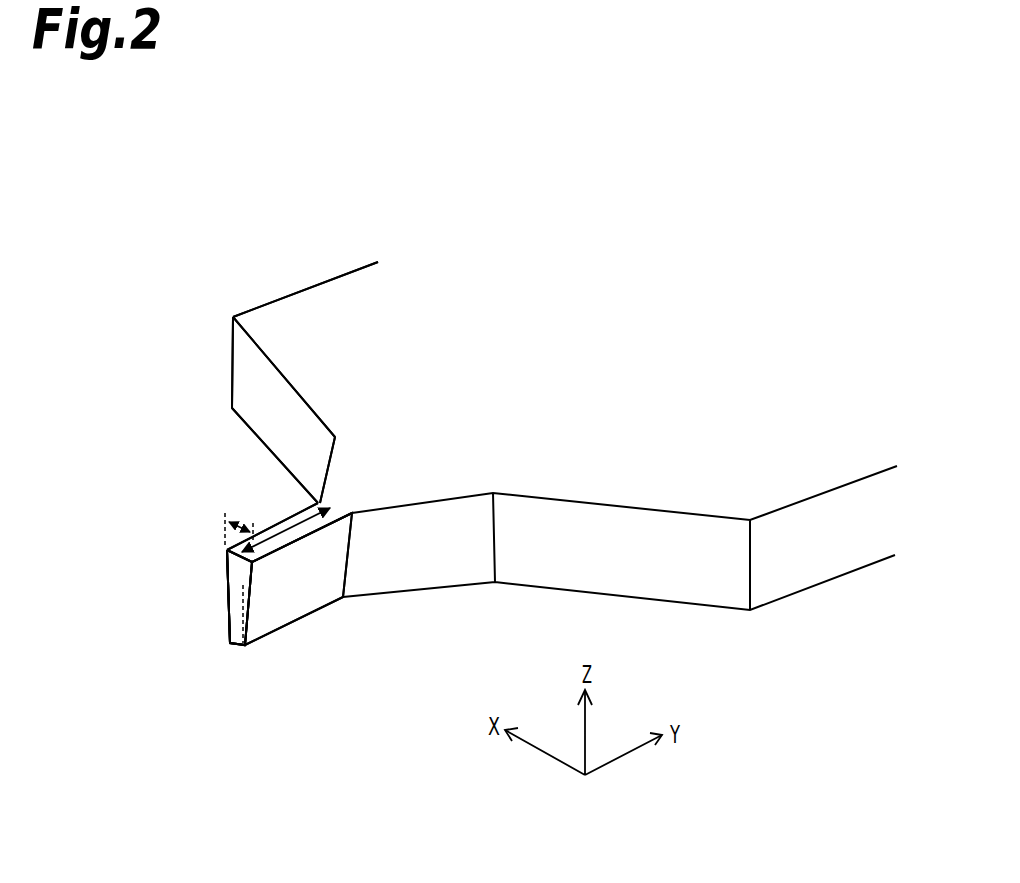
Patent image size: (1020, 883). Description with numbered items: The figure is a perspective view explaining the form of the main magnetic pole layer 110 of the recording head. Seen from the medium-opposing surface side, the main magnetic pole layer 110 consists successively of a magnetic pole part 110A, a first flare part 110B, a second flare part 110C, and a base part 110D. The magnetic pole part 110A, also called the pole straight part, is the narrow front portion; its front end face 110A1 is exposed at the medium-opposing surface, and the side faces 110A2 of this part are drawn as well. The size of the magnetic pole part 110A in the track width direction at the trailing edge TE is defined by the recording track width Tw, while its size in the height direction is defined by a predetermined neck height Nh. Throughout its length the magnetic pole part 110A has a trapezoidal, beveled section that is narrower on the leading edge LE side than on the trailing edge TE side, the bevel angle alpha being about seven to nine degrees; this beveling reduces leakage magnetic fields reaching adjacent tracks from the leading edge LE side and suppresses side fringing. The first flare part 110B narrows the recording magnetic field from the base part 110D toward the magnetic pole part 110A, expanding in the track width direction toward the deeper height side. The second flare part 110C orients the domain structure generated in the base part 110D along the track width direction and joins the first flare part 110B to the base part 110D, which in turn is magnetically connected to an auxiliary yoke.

The main magnetic pole layer 110 is at (227, 199).
The magnetic pole part 110A is at (288, 512).
The front end face 110A1 is at (236, 618).
The second side surface of tip portion 110A2 is at (228, 607).
The first flare part 110B is at (343, 472).
The second flare part 110C is at (287, 352).
The base part 110D is at (397, 303).
The leading edge LE is at (240, 645).
The trailing edge TE is at (228, 549).
The bevel angle alpha is at (225, 561).
The recording track width Tw is at (241, 524).
The neck height Nh is at (292, 521).